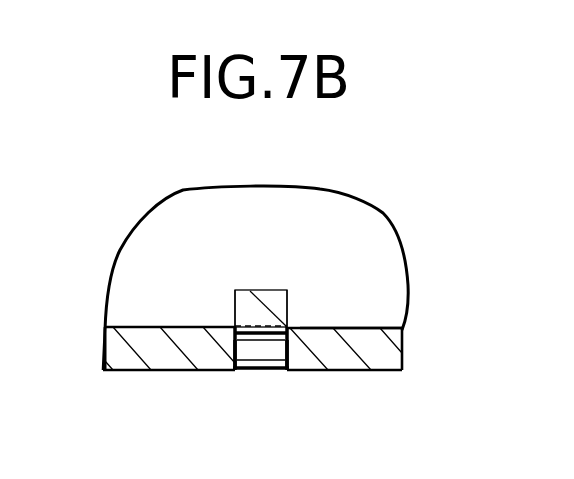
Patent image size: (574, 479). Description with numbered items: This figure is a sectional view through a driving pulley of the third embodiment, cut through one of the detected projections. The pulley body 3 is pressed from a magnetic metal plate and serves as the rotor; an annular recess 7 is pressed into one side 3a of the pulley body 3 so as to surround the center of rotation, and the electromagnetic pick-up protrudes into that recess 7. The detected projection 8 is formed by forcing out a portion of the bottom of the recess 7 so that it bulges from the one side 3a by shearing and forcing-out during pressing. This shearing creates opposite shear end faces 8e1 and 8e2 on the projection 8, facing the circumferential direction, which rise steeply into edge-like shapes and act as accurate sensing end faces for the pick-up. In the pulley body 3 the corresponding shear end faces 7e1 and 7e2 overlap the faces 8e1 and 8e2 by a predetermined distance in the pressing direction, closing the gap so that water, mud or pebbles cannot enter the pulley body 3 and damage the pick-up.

The pulley body 3 is at (160, 383).
The one side of pulley body 3a is at (382, 329).
The recess 7 is at (167, 326).
The shear end face 7e1 is at (277, 357).
The shear end face 7e2 is at (244, 357).
The detected projection 8 is at (246, 272).
The shear end face of projection 8e1 is at (287, 312).
The shear end face of projection 8e2 is at (235, 322).